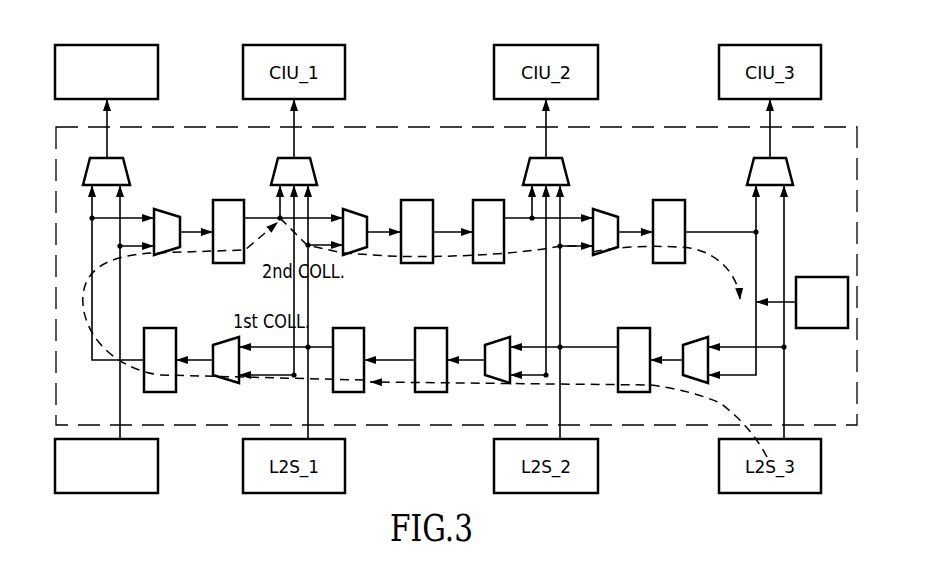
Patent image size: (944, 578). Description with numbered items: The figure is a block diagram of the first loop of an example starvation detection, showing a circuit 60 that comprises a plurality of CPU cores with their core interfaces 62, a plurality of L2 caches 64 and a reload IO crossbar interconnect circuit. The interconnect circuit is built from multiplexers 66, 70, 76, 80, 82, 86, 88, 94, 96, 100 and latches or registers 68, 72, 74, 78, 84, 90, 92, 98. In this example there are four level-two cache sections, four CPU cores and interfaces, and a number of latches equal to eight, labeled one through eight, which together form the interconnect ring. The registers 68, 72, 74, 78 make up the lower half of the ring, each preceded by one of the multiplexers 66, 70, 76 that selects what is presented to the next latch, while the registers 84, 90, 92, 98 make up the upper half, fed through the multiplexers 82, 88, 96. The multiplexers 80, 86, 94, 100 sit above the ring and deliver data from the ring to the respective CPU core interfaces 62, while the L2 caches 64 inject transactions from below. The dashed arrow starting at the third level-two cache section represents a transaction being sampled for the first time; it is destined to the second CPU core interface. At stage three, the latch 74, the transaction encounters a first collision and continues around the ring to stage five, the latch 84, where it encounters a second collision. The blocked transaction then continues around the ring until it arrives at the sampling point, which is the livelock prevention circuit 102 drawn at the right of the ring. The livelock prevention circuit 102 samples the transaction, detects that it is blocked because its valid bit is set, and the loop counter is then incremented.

The circuit 60 is at (193, 503).
The CPU core and core interface 62 is at (158, 74).
The L2 cache 64 is at (158, 467).
The multiplexer 66 is at (692, 340).
The latch 68 is at (632, 328).
The multiplexer 70 is at (497, 338).
The latch 72 is at (430, 328).
The latch 74 is at (345, 328).
The multiplexer 76 is at (225, 338).
The latch 78 is at (160, 328).
The multiplexer 80 is at (130, 166).
The multiplexer 82 is at (165, 209).
The latch 84 is at (225, 200).
The multiplexer 86 is at (276, 168).
The multiplexer 88 is at (352, 209).
The latch 90 is at (415, 200).
The latch 92 is at (487, 200).
The multiplexer 94 is at (528, 168).
The multiplexer 96 is at (602, 209).
The latch 98 is at (665, 200).
The multiplexer 100 is at (752, 168).
The livelock prevention circuit 102 is at (820, 328).